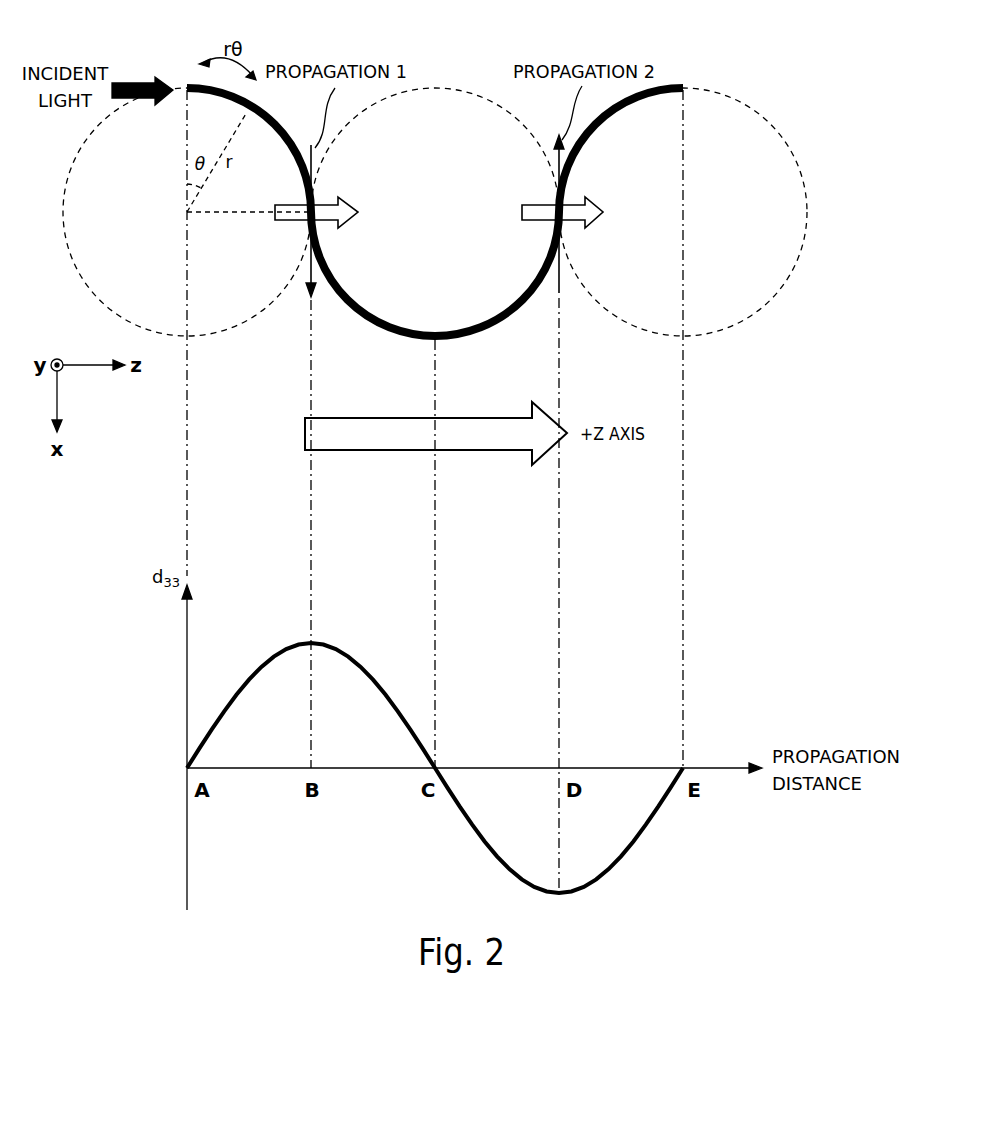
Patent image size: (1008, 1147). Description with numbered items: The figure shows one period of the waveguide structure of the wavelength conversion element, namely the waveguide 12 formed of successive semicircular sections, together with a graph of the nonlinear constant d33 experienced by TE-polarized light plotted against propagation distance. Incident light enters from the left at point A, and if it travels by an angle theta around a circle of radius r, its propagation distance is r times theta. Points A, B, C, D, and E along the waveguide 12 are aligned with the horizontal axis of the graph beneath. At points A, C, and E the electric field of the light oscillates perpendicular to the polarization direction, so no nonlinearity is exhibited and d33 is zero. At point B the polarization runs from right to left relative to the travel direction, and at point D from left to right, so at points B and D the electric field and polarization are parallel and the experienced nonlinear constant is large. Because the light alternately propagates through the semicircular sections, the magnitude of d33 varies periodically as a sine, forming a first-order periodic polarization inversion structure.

The waveguide 12 is at (668, 86).
The point A is at (185, 88).
The point B is at (309, 222).
The point C is at (435, 339).
The point D is at (555, 222).
The point E is at (687, 84).